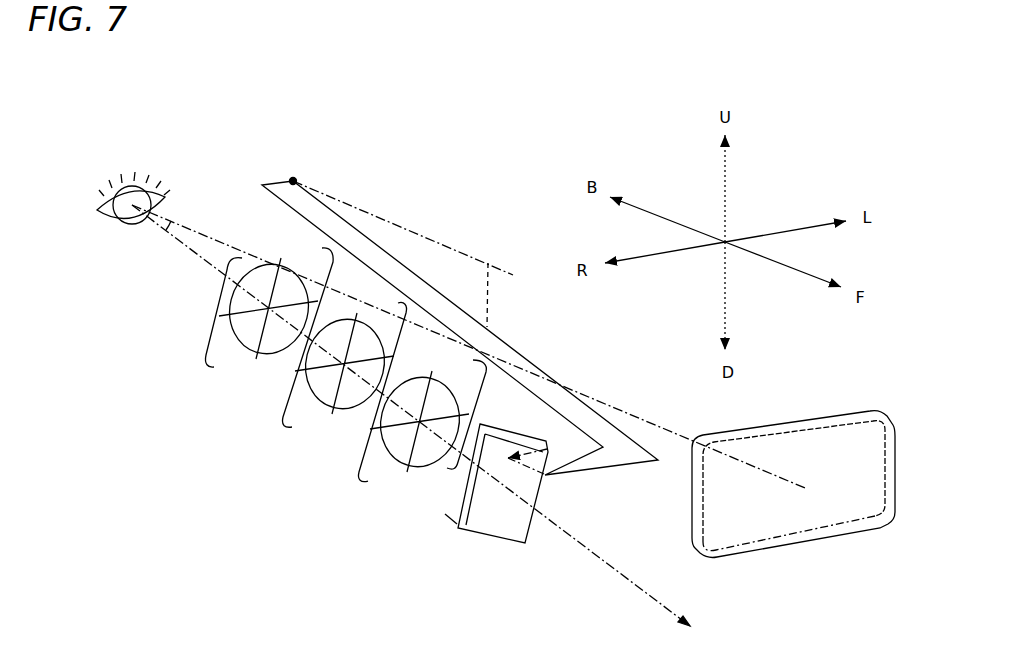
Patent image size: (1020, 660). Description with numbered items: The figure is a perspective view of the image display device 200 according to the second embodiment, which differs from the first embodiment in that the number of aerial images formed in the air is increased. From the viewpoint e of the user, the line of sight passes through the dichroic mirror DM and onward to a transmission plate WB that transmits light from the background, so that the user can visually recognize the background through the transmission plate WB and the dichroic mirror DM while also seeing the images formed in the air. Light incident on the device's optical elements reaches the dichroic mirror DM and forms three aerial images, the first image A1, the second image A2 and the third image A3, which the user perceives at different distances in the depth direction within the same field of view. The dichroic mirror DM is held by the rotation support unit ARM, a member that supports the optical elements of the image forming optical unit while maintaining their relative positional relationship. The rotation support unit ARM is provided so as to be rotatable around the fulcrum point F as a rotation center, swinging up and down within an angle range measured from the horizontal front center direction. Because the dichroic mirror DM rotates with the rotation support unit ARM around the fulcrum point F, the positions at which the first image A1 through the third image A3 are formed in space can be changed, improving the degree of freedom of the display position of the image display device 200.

The viewpoint e is at (129, 184).
The fulcrum point F is at (292, 169).
The rotation support unit ARM is at (460, 338).
The third image A3 is at (261, 325).
The second image A2 is at (338, 350).
The first image A1 is at (422, 405).
The dichroic mirror DM is at (486, 487).
The image display device 200 is at (245, 480).
The transmission plate WB is at (793, 498).